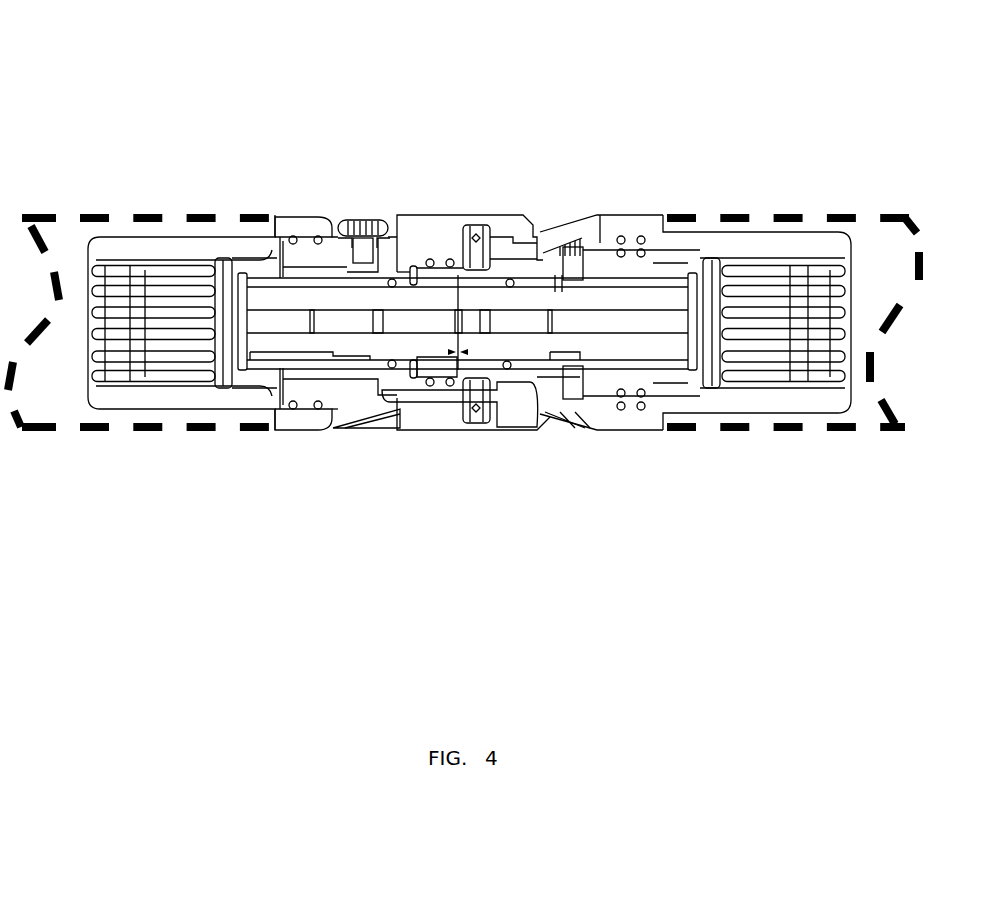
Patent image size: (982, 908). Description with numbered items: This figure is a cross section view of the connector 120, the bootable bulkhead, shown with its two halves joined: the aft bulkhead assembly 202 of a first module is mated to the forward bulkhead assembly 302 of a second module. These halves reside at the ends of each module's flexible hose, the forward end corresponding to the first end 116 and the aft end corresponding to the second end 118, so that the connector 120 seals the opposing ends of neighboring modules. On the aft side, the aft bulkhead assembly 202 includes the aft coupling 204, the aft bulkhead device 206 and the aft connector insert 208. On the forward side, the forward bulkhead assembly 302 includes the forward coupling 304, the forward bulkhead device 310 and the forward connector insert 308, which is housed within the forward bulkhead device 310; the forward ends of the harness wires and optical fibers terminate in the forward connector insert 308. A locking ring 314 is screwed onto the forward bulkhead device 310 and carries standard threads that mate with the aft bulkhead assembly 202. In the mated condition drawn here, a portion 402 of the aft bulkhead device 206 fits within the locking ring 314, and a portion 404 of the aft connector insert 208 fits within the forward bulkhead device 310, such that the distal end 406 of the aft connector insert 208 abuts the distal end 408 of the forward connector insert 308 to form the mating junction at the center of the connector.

The first end 116 is at (721, 527).
The second end 118 is at (208, 543).
The connector 120 is at (567, 77).
The aft bulkhead assembly 202 is at (160, 80).
The aft coupling 204 is at (195, 230).
The aft bulkhead device 206 is at (423, 243).
The aft connector insert 208 is at (278, 297).
The forward bulkhead assembly 302 is at (705, 78).
The forward coupling 304 is at (746, 233).
The forward connector insert 308 is at (625, 297).
The forward bulkhead device 310 is at (578, 232).
The locking ring 314 is at (492, 223).
The portion of the aft bulkhead device 402 is at (437, 190).
The portion of the aft connector insert 404 is at (452, 440).
The distal end of the aft connector insert 406 is at (450, 348).
The distal end of the forward connector insert 408 is at (450, 348).